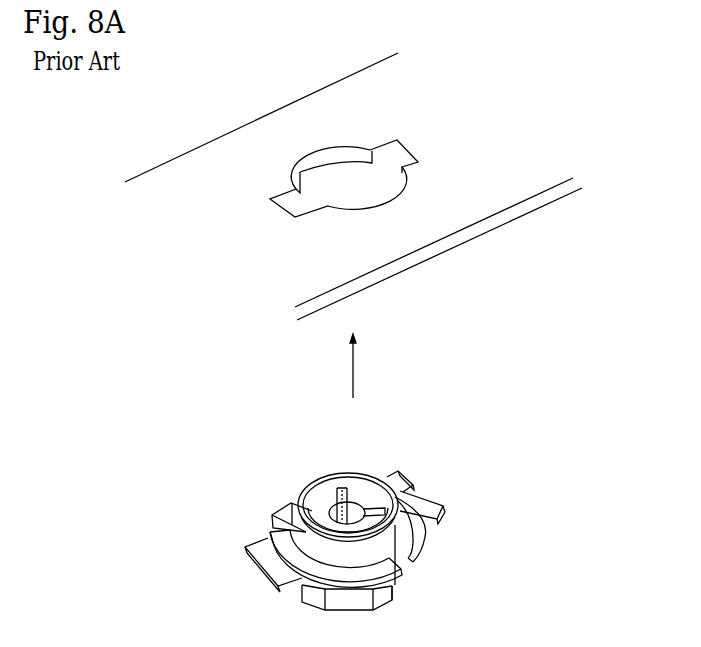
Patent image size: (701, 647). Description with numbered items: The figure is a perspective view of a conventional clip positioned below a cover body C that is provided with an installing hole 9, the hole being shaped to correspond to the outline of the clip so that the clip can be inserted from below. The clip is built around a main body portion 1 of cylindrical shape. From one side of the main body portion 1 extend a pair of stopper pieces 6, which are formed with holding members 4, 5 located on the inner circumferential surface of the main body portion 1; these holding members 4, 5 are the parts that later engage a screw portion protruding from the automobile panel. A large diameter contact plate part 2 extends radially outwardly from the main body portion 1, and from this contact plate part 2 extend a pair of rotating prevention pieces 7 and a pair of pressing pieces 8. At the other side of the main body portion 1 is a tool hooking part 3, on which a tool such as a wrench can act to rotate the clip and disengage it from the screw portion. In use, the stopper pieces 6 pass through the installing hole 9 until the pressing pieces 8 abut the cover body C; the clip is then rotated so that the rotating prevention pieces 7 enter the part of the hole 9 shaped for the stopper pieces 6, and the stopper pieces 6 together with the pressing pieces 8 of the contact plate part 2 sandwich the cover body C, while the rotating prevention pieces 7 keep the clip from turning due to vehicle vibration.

The cover body C is at (207, 140).
The installing hole 9 is at (327, 180).
The main body portion 1 is at (310, 478).
The large diameter contact plate part 2 is at (420, 534).
The tool hooking part 3 is at (313, 600).
The holding member 4 is at (357, 500).
The holding member 5 is at (347, 490).
The stopper piece 6 is at (285, 508).
The rotating prevention piece 7 is at (394, 595).
The pressing piece 8 is at (427, 505).